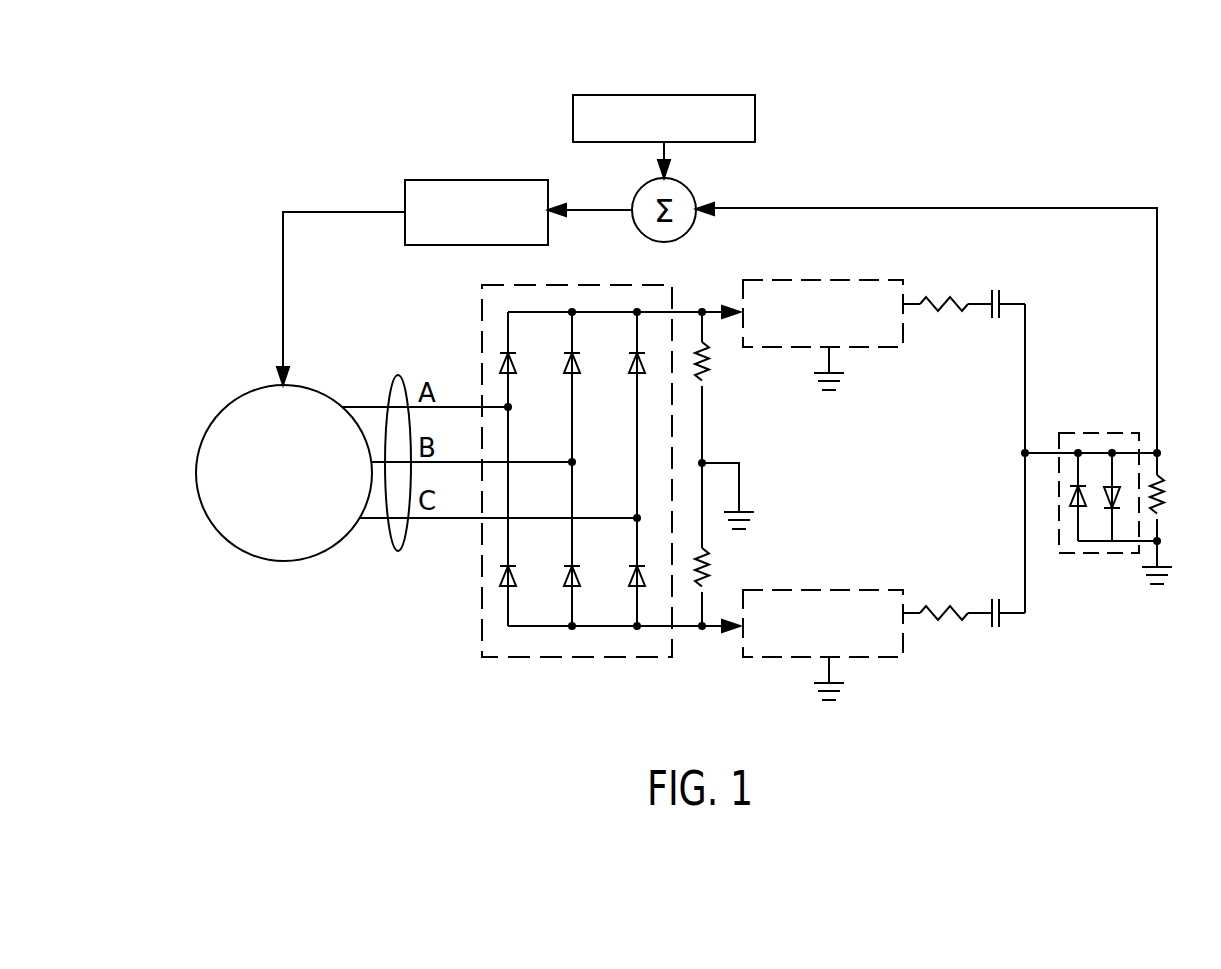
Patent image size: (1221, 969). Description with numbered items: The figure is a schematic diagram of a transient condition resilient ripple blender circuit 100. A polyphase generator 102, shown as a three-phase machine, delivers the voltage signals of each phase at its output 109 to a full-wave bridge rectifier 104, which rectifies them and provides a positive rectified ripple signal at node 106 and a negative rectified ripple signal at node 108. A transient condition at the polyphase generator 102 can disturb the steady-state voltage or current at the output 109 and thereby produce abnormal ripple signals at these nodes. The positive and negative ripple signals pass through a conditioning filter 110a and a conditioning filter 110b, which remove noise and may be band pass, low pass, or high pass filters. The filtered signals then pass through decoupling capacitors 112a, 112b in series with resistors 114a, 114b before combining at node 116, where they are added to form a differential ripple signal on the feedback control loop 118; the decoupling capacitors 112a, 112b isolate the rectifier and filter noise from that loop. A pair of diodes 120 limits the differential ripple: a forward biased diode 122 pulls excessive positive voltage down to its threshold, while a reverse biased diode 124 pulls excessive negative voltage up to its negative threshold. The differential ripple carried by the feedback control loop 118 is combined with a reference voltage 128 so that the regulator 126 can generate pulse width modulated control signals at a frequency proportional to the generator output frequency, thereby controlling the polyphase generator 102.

The ripple blender circuit 100 is at (975, 117).
The polyphase generator 102 is at (283, 562).
The full-wave bridge rectifier 104 is at (513, 657).
The node 106 is at (702, 310).
The node 108 is at (702, 626).
The output 109 is at (398, 552).
The conditioning filter 110a is at (802, 280).
The conditioning filter 110b is at (882, 657).
The decoupling capacitor 112a is at (1000, 293).
The decoupling capacitor 112b is at (1000, 617).
The resistor 114a is at (933, 293).
The resistor 114b is at (940, 617).
The node 116 is at (1025, 453).
The feedback control loop 118 is at (1135, 208).
The pair of diodes 120 is at (1098, 534).
The forward biased diode 122 is at (1123, 485).
The reverse biased diode 124 is at (1075, 507).
The regulator 126 is at (405, 197).
The reference voltage 128 is at (755, 118).